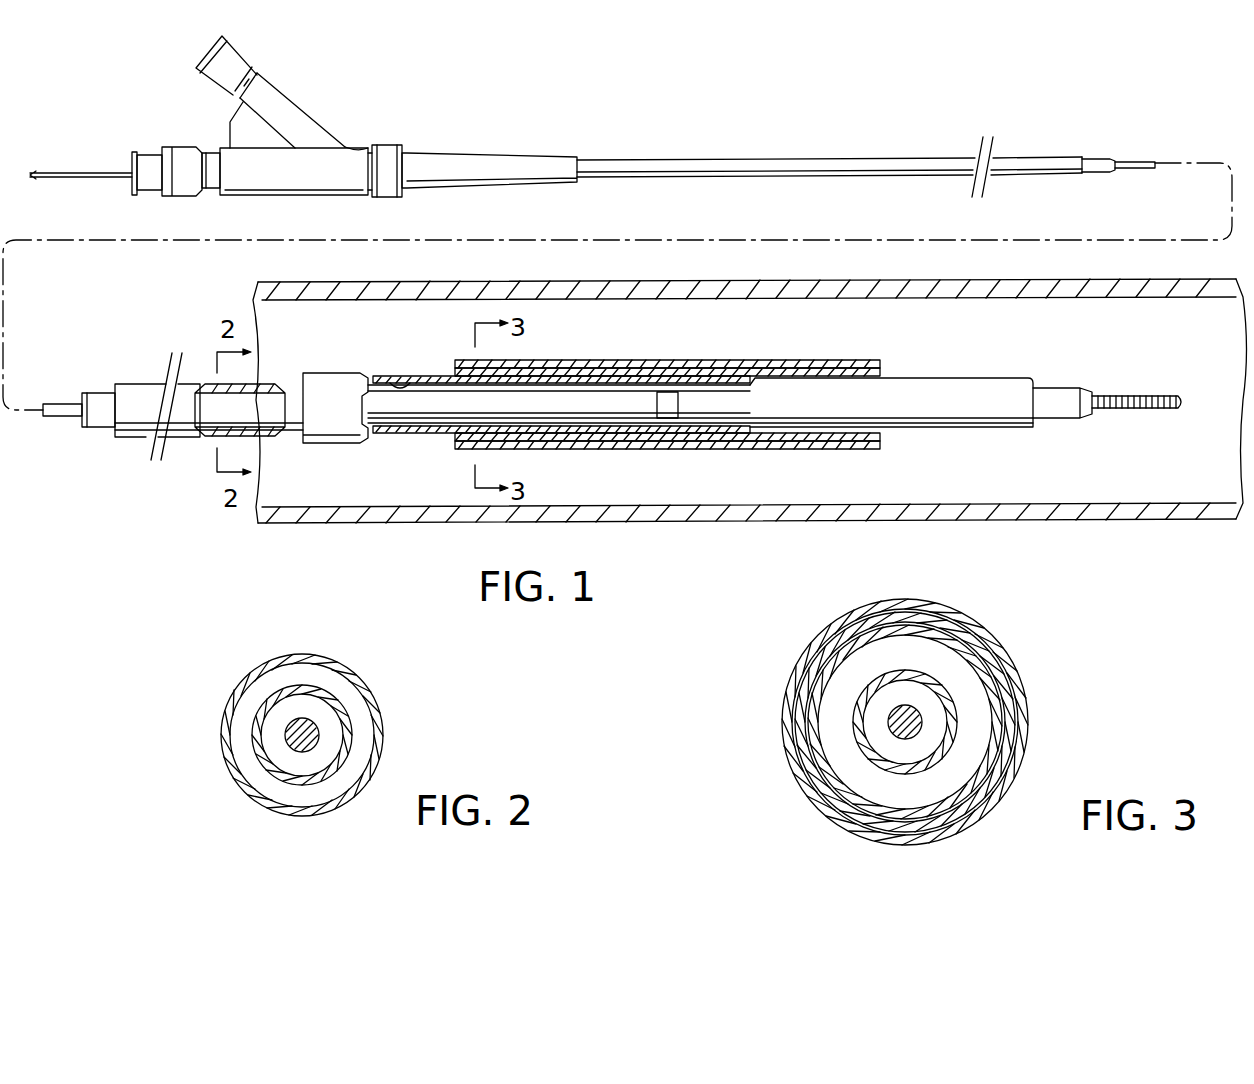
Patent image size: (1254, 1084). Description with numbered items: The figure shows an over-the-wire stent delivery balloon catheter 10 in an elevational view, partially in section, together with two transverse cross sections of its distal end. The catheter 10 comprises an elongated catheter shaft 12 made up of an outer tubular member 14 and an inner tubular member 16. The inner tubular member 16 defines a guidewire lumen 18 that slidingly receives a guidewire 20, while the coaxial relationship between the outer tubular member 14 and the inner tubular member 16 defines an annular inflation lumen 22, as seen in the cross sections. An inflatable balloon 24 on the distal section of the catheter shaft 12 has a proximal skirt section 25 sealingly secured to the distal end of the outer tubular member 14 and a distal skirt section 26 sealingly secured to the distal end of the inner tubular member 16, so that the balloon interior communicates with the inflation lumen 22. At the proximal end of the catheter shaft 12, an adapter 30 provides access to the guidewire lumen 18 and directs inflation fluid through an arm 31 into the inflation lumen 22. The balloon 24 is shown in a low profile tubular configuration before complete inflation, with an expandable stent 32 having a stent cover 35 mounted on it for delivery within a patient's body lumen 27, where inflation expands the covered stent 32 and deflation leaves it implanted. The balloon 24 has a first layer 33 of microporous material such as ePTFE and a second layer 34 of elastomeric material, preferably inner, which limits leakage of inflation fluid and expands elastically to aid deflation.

In FIG. 1, the stent delivery balloon catheter 10 is at (878, 127).
In FIG. 1, the catheter shaft 12 is at (832, 176).
In FIG. 1, the outer tubular member 14 is at (1038, 175).
In FIG. 2, the outer tubular member 14 is at (250, 678).
In FIG. 1, the inner tubular member 16 is at (1087, 158).
In FIG. 2, the inner tubular member 16 is at (353, 747).
In FIG. 3, the inner tubular member 16 is at (950, 750).
In FIG. 2, the guidewire lumen 18 is at (278, 748).
In FIG. 3, the guidewire lumen 18 is at (885, 745).
In FIG. 1, the guidewire 20 is at (97, 170).
In FIG. 2, the guidewire 20 is at (307, 720).
In FIG. 3, the guidewire 20 is at (915, 712).
In FIG. 1, the annular inflation lumen 22 is at (213, 428).
In FIG. 2, the annular inflation lumen 22 is at (247, 723).
In FIG. 1, the inflatable balloon 24 is at (900, 403).
In FIG. 1, the proximal skirt section 25 is at (330, 444).
In FIG. 1, the distal skirt section 26 is at (997, 432).
In FIG. 1, the body lumen 27 is at (1141, 341).
In FIG. 1, the adapter 30 is at (220, 148).
In FIG. 1, the arm 31 is at (313, 117).
In FIG. 1, the expandable stent 32 is at (690, 370).
In FIG. 3, the expandable stent 32 is at (795, 693).
In FIG. 1, the first layer 33 is at (428, 376).
In FIG. 3, the first layer 33 is at (997, 690).
In FIG. 1, the second layer 34 is at (392, 380).
In FIG. 3, the second layer 34 is at (990, 720).
In FIG. 1, the stent cover 35 is at (813, 363).
In FIG. 3, the stent cover 35 is at (803, 657).